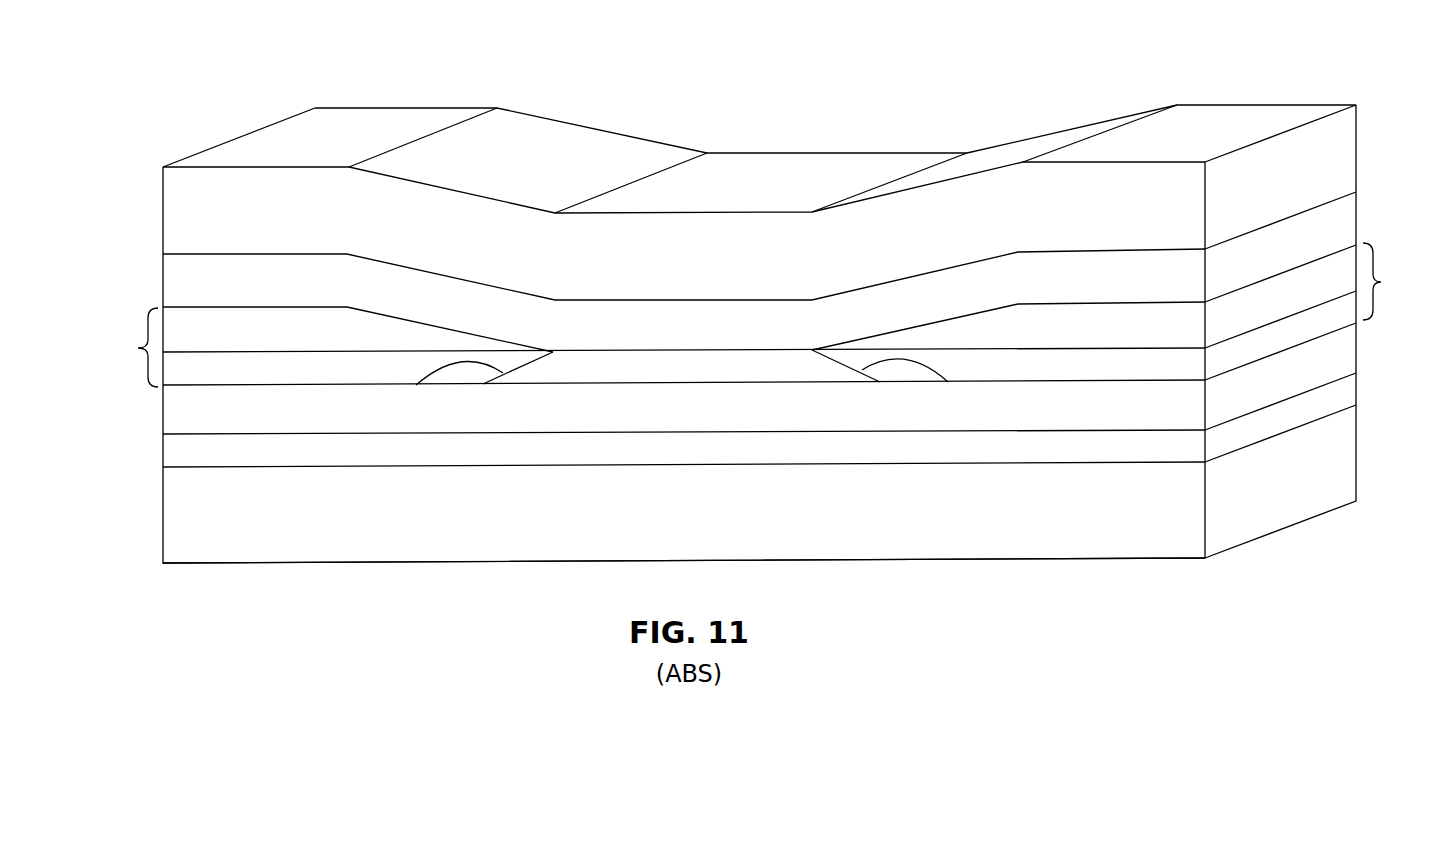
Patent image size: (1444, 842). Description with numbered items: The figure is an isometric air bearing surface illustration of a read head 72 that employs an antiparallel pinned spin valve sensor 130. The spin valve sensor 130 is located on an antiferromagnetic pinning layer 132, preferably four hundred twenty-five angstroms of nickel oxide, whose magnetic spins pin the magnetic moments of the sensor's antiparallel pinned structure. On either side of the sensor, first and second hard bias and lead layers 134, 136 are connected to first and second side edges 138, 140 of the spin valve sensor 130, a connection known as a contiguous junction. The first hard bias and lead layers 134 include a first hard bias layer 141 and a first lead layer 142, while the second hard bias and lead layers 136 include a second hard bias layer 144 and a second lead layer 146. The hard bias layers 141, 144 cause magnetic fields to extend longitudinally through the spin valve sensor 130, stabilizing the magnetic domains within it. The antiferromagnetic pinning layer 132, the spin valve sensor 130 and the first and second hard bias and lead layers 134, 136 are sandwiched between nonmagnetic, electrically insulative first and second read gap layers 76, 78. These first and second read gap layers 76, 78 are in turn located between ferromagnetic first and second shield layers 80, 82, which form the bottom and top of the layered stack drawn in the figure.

The read head 72 is at (833, 125).
The first read gap layer 76 is at (453, 455).
The second read gap layer 78 is at (413, 287).
The first shield layer 80 is at (336, 540).
The second shield layer 82 is at (610, 143).
The spin valve sensor 130 is at (590, 350).
The antiferromagnetic pinning layer 132 is at (880, 413).
The first hard bias and lead layers 134 is at (120, 347).
The second hard bias and lead layers 136 is at (1396, 281).
The first side edge 138 is at (416, 385).
The second side edge 140 is at (948, 382).
The first hard bias layer 141 is at (207, 370).
The first lead layer 142 is at (207, 317).
The second hard bias layer 144 is at (1152, 367).
The second lead layer 146 is at (1152, 316).